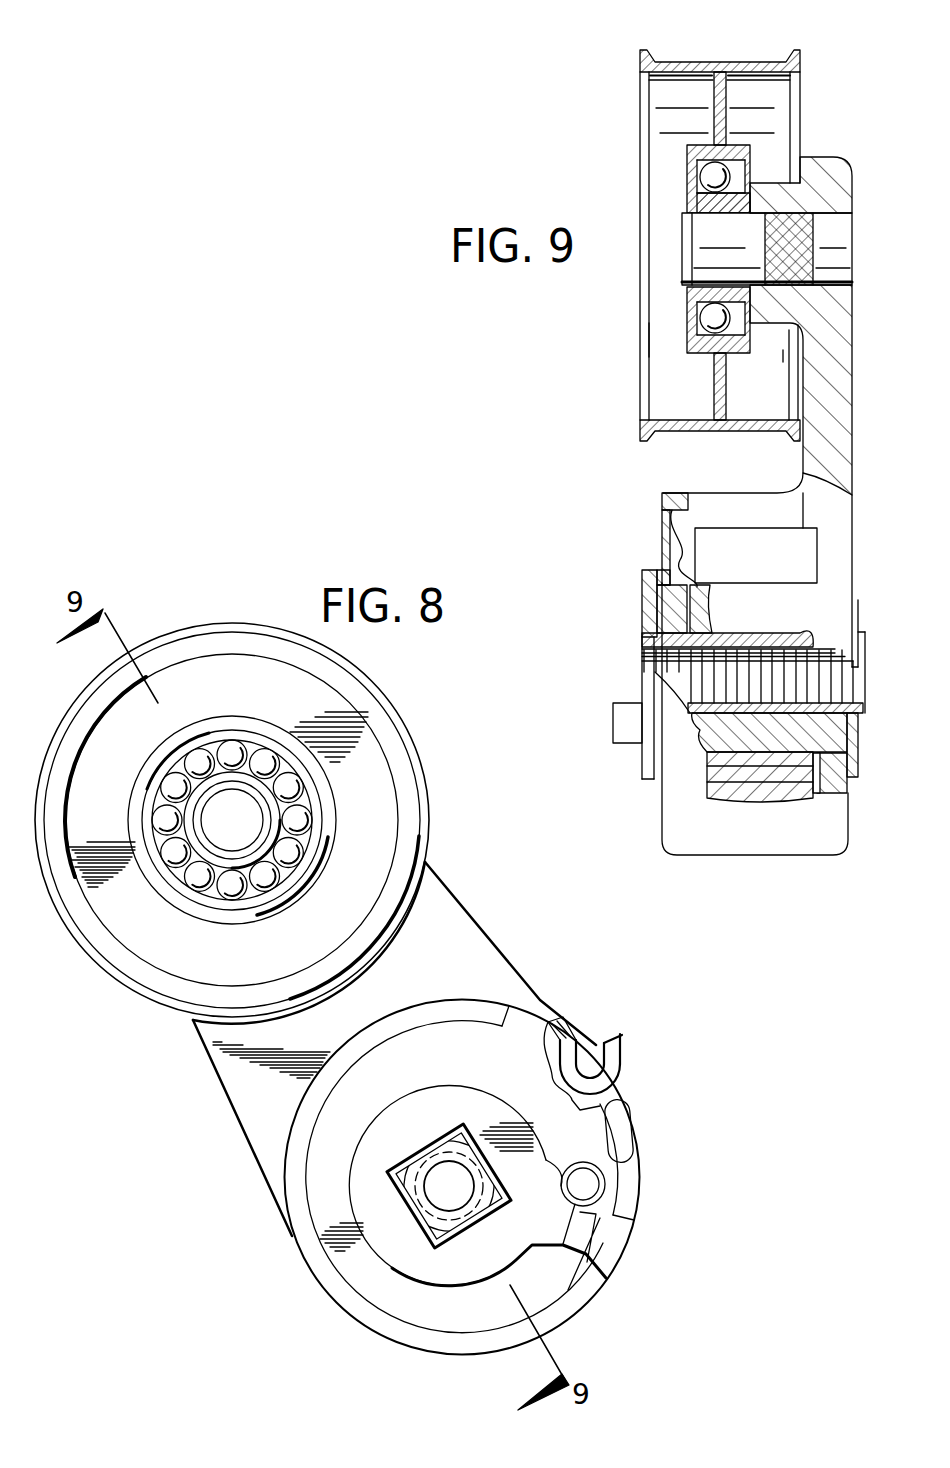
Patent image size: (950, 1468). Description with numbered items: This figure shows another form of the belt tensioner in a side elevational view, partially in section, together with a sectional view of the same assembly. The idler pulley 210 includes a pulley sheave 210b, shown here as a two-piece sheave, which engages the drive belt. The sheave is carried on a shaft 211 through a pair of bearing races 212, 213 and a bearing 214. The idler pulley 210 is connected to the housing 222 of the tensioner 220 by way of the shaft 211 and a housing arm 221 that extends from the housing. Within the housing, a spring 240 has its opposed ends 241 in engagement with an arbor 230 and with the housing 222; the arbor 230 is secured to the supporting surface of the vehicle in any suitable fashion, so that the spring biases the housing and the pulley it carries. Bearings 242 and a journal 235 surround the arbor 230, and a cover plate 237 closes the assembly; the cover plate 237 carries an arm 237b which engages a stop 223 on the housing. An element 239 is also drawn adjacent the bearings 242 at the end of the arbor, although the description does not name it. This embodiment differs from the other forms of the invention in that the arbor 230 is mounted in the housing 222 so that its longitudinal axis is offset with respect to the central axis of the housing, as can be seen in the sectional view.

In FIG. 9, the idler pulley 210 is at (627, 73).
In FIG. 8, the idler pulley 210 is at (443, 811).
In FIG. 9, the pulley sheave 210b is at (695, 60).
In FIG. 8, the pulley sheave 210b is at (428, 764).
In FIG. 9, the shaft 211 is at (842, 240).
In FIG. 8, the shaft 211 is at (255, 832).
In FIG. 9, the bearing race 212 is at (698, 202).
In FIG. 9, the bearing race 213 is at (698, 157).
In FIG. 9, the bearing 214 is at (703, 180).
In FIG. 9, the tensioner 220 is at (658, 484).
In FIG. 8, the tensioner 220 is at (650, 1238).
In FIG. 9, the housing arm 221 is at (842, 403).
In FIG. 8, the housing arm 221 is at (480, 943).
In FIG. 9, the housing 222 is at (719, 848).
In FIG. 8, the stop 223 is at (585, 1184).
In FIG. 9, the arbor 230 is at (648, 643).
In FIG. 9, the journal 235 is at (662, 612).
In FIG. 9, the cover plate 237 is at (648, 578).
In FIG. 9, the arm 237b is at (618, 703).
In FIG. 8, the arm 237b is at (586, 1254).
In FIG. 9, the washer 239 is at (858, 764).
In FIG. 9, the spring 240 is at (718, 772).
In FIG. 8, the spring 240 is at (560, 1062).
In FIG. 8, the spring end 241 is at (612, 1036).
In FIG. 9, the bearing 242 is at (662, 568).